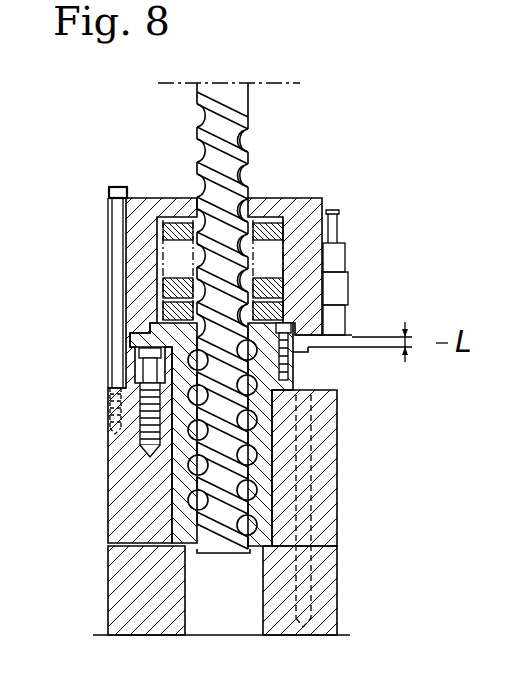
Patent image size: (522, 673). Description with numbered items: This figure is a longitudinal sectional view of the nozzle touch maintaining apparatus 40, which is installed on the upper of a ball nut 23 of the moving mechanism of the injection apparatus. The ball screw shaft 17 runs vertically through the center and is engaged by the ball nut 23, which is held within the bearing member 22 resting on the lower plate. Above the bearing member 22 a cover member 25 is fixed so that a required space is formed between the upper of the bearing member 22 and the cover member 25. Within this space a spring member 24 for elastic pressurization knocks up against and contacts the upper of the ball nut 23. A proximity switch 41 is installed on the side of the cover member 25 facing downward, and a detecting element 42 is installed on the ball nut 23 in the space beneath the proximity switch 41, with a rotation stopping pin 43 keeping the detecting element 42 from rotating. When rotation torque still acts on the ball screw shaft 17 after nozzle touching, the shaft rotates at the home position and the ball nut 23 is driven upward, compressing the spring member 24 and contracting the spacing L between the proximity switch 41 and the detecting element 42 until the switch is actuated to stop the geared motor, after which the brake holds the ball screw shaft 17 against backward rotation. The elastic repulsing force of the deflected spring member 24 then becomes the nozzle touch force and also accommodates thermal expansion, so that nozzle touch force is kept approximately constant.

The ball screw shaft 17 is at (251, 141).
The bearing member 22 is at (135, 587).
The ball nut 23 is at (265, 434).
The spring member for elastic pressurization 24 is at (166, 291).
The cover member 25 is at (332, 222).
The nozzle touch maintaining apparatus 40 is at (306, 187).
The proximity switch 41 is at (337, 258).
The detecting element 42 is at (330, 334).
The rotation stopping pin 43 is at (132, 437).